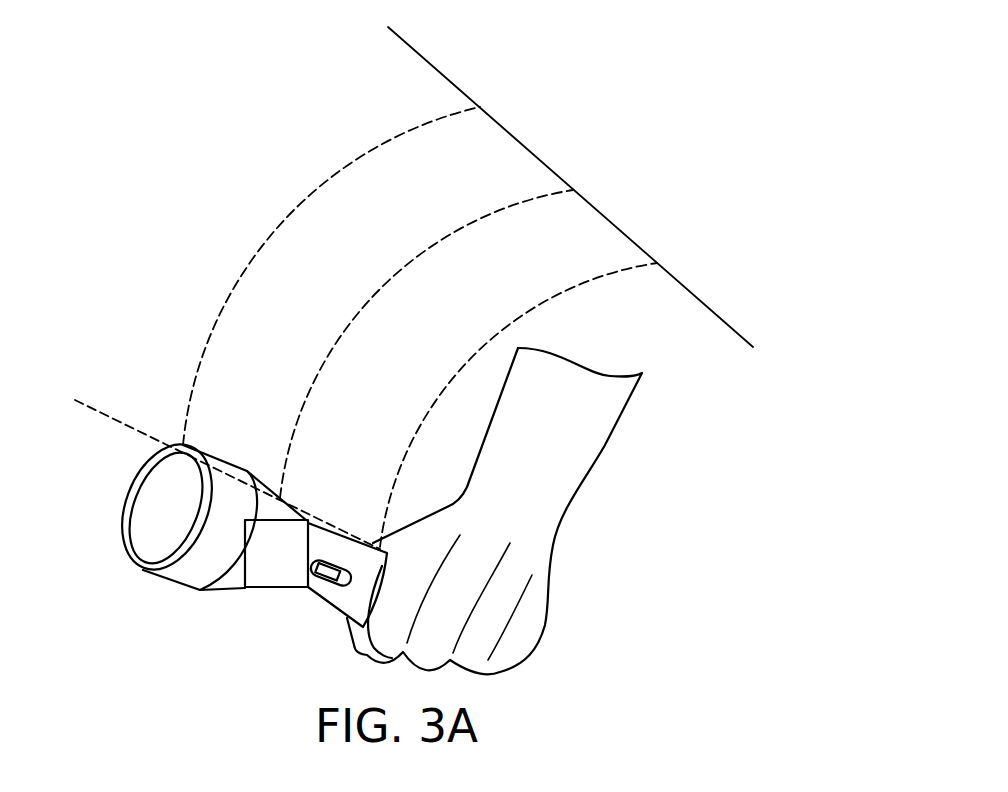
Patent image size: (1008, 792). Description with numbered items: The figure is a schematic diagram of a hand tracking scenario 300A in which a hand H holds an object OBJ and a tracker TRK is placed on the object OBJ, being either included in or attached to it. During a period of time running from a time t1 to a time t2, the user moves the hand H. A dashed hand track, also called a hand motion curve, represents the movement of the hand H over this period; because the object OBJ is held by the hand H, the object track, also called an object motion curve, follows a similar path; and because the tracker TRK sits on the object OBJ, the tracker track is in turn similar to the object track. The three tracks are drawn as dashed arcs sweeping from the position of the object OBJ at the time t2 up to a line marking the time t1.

The object OBJ is at (125, 508).
The tracker TRK is at (285, 588).
The hand H is at (608, 442).
The time t1 is at (560, 175).
The time t2 is at (216, 464).
The hand tracking scenario 300A is at (770, 670).